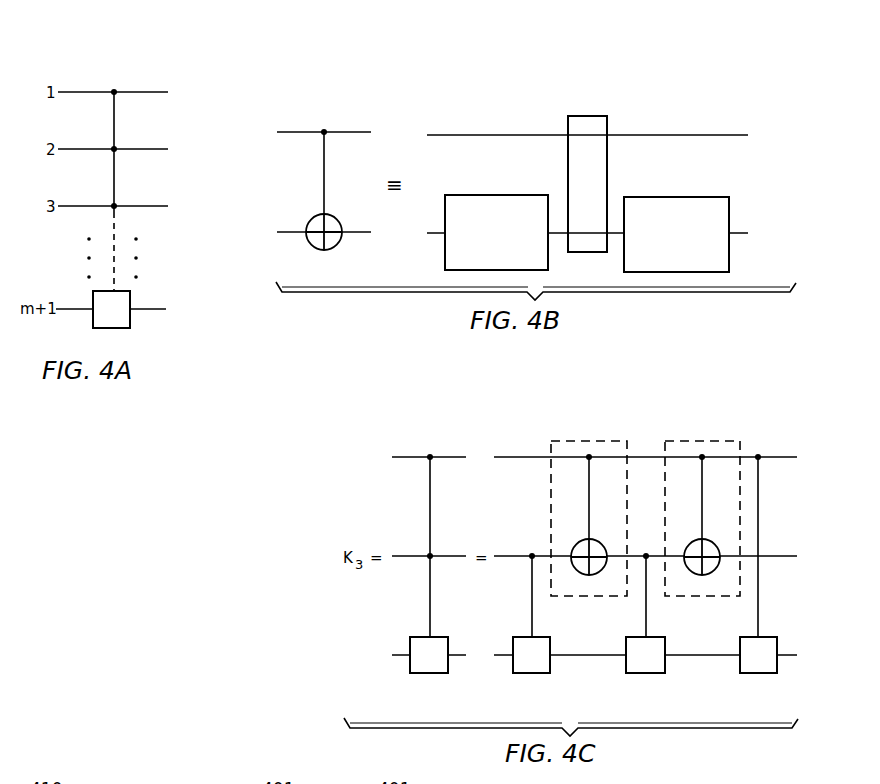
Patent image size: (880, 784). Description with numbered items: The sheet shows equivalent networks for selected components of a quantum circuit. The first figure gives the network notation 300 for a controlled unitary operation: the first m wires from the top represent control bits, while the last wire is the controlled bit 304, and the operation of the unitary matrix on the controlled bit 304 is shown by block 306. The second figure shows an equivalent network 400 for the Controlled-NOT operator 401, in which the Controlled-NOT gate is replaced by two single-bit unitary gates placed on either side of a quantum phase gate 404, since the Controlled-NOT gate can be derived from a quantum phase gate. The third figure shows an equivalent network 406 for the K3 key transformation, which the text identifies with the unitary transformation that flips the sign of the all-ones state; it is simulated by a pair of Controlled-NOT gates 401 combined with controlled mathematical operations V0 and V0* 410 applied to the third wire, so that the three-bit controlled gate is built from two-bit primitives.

In FIG. 4A, the network notation 300 is at (92, 76).
In FIG. 4A, the controlled bit 304 is at (160, 309).
In FIG. 4A, the block 306 is at (130, 318).
In FIG. 4B, the equivalent network 400 is at (732, 105).
In FIG. 4B, the Controlled-NOT operator 401 is at (305, 103).
In FIG. 4B, the quantum phase gate 404 is at (607, 176).
In FIG. 4C, the equivalent network 406 is at (396, 437).
In FIG. 4C, the mathematical operation V0* 410 is at (650, 674).